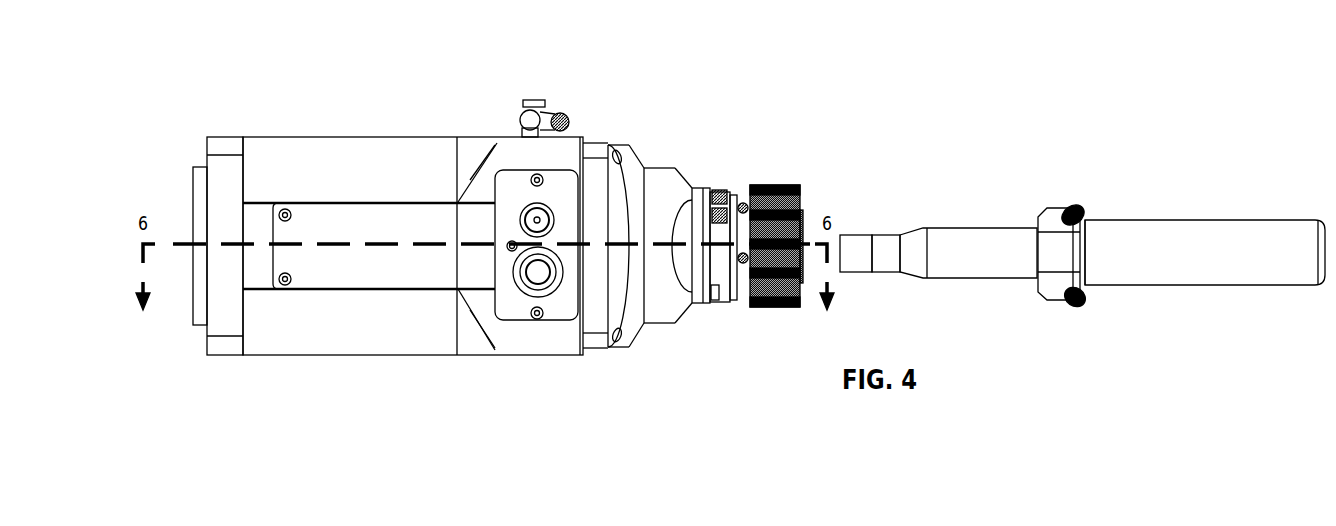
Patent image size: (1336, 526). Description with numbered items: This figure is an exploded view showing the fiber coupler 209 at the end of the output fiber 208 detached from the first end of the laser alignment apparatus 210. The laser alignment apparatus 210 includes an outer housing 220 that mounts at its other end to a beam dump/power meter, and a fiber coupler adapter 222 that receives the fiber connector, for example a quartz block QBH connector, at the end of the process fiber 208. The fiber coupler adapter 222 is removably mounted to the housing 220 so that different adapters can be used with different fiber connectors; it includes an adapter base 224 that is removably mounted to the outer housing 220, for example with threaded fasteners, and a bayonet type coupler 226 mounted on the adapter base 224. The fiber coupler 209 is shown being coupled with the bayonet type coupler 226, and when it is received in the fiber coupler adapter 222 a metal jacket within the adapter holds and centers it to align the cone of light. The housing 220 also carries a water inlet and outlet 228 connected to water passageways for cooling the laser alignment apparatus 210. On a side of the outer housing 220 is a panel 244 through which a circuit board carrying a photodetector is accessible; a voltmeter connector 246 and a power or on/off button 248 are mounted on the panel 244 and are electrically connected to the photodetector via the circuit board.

The output fiber 208 is at (1176, 190).
The fiber coupler 209 is at (925, 192).
The laser alignment apparatus 210 is at (728, 92).
The outer housing 220 is at (265, 147).
The fiber coupler adapter 222 is at (782, 140).
The adapter base 224 is at (636, 162).
The bayonet type coupler 226 is at (793, 185).
The water inlet and outlet 228 is at (530, 127).
The panel 244 is at (368, 280).
The voltmeter connector 246 is at (527, 217).
The power or on/off button 248 is at (530, 275).